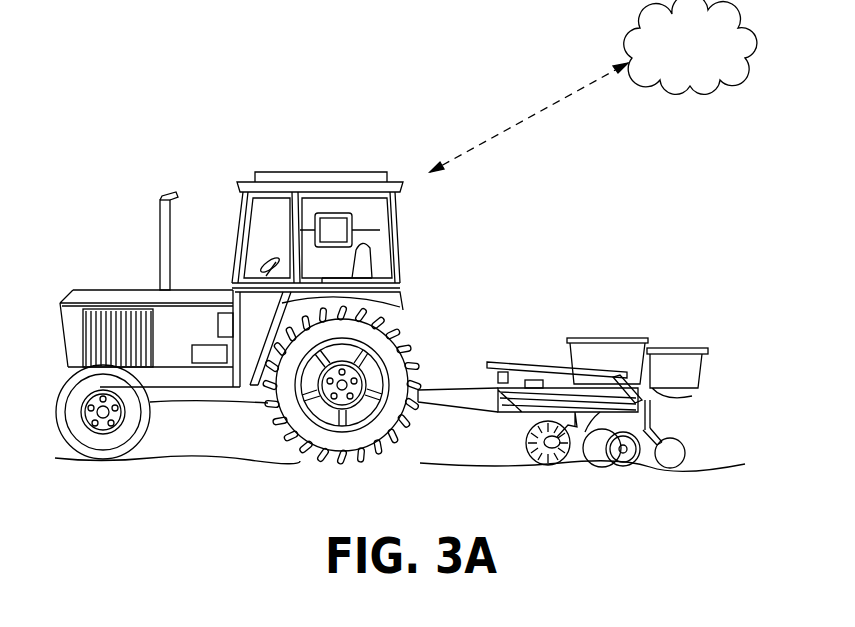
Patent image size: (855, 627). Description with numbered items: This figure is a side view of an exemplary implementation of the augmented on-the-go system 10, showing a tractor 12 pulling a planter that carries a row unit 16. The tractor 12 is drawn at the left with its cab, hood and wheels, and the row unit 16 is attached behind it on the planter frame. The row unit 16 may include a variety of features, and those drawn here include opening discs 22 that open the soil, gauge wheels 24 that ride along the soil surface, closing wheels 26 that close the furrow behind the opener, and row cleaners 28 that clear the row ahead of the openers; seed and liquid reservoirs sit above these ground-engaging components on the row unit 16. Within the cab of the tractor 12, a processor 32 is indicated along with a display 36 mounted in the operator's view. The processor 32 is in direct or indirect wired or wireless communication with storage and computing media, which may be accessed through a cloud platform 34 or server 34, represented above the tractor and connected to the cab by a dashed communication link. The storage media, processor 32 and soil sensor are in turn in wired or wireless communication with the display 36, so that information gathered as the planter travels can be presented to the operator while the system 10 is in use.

The augmented on-the-go system 10 is at (690, 200).
The tractor 12 is at (300, 170).
The row unit 16 is at (650, 365).
The opening discs 22 is at (590, 458).
The gauge wheels 24 is at (652, 467).
The closing wheels 26 is at (690, 453).
The row cleaners 28 is at (523, 455).
The processor 32 is at (378, 236).
The cloud platform 34 is at (677, 52).
The display 36 is at (325, 213).